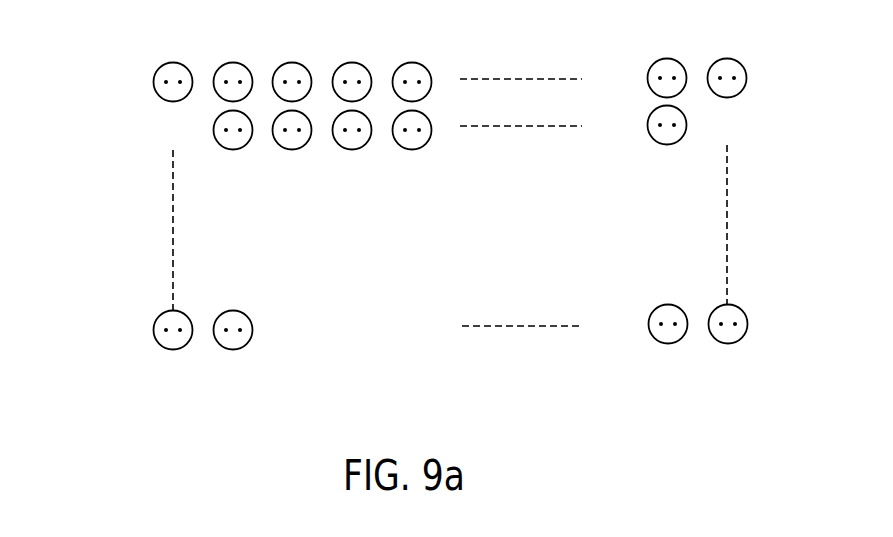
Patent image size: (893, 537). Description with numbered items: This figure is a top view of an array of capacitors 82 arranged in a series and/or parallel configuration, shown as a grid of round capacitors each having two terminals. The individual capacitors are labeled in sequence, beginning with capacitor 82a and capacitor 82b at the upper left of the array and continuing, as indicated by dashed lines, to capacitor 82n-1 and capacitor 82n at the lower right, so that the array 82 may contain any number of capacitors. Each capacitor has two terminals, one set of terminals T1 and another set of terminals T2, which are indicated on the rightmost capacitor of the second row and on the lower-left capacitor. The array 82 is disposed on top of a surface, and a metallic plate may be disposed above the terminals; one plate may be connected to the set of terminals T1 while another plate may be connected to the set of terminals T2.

The array of capacitors 82 is at (88, 172).
The capacitor 82a is at (172, 62).
The capacitor 82b is at (233, 62).
The capacitor 82n-1 is at (668, 344).
The capacitor 82n is at (728, 344).
The terminals T1 is at (405, 130).
The terminals T2 is at (419, 130).